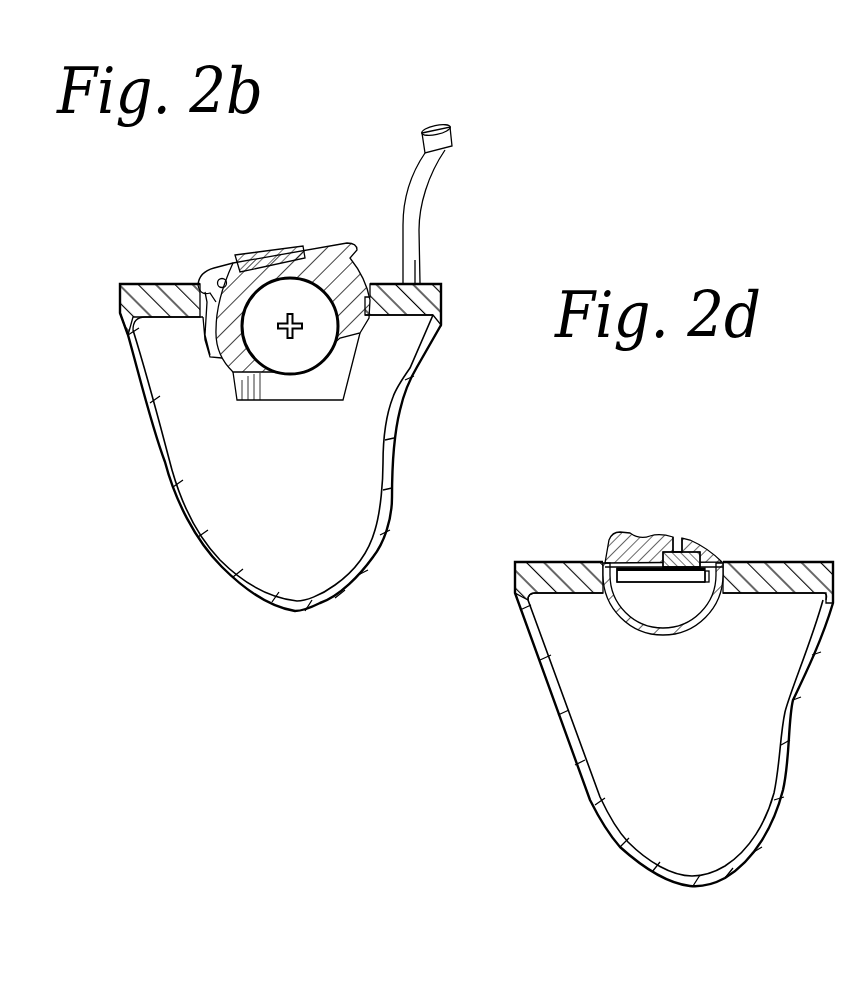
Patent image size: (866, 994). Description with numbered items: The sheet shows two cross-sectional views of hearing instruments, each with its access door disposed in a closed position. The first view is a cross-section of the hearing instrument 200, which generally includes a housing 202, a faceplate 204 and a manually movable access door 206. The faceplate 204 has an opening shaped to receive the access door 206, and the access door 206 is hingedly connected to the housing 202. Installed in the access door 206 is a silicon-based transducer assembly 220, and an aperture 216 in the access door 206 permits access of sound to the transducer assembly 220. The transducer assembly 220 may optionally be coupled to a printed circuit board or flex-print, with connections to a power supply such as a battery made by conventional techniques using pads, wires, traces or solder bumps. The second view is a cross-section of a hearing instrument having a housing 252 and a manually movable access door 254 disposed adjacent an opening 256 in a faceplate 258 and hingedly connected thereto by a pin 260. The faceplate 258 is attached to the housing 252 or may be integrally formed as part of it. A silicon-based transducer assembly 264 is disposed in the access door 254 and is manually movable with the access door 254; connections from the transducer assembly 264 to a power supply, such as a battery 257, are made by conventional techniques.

In FIG. 2B, the hearing instrument 200 is at (279, 447).
In FIG. 2B, the housing 202 is at (417, 373).
In FIG. 2B, the faceplate 204 is at (423, 283).
In FIG. 2B, the access door 206 is at (333, 270).
In FIG. 2B, the aperture 216 is at (263, 250).
In FIG. 2B, the silicon-based transducer assembly 220 is at (277, 248).
In FIG. 2D, the housing 252 is at (788, 733).
In FIG. 2D, the access door 254 is at (694, 519).
In FIG. 2D, the opening 256 is at (690, 600).
In FIG. 2D, the battery 257 is at (662, 578).
In FIG. 2D, the faceplate 258 is at (548, 565).
In FIG. 2D, the pin 260 is at (633, 570).
In FIG. 2D, the silicon-based transducer assembly 264 is at (697, 540).